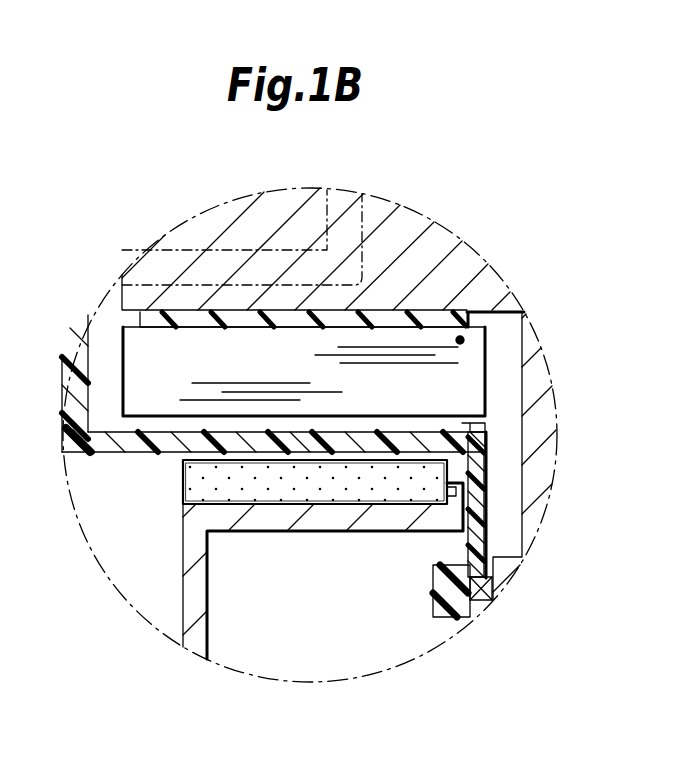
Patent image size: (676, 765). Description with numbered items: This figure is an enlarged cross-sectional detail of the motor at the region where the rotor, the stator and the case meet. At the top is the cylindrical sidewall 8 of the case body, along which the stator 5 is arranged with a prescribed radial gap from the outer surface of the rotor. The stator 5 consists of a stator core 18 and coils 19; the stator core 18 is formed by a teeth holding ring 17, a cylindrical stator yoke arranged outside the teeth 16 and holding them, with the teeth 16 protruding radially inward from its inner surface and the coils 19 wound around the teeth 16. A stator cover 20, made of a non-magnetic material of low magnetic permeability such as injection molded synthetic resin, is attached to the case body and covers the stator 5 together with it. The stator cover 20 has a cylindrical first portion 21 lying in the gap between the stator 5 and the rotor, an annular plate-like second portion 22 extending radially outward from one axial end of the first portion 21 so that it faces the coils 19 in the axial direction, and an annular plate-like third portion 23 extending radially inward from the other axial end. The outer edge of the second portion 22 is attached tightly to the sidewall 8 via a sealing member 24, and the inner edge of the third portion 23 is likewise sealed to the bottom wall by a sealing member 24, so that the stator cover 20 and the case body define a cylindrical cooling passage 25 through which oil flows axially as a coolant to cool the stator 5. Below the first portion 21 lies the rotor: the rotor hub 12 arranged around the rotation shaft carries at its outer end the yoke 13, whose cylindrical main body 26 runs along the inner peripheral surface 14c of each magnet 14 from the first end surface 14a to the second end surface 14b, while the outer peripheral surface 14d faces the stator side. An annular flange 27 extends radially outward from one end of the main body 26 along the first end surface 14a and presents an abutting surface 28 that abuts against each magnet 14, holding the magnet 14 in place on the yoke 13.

The stator 5 is at (492, 373).
The sidewall 8 is at (437, 243).
The rotor hub 12 is at (202, 623).
The yoke 13 is at (281, 522).
The magnet 14 is at (353, 483).
The first end surface 14a is at (486, 472).
The second end surface 14b is at (182, 490).
The inner peripheral surface 14c is at (311, 505).
The outer peripheral surface 14d is at (251, 457).
The teeth 16 is at (478, 424).
The teeth holding ring 17 is at (420, 313).
The stator core 18 is at (378, 308).
The coil 19 is at (470, 406).
The stator cover 20 is at (98, 457).
The first portion 21 is at (128, 455).
The second portion 22 is at (72, 408).
The third portion 23 is at (482, 520).
The sealing member 24 is at (479, 603).
The cooling passage 25 is at (460, 340).
The main body 26 is at (377, 522).
The flange 27 is at (482, 497).
The abutting surface 28 is at (448, 495).